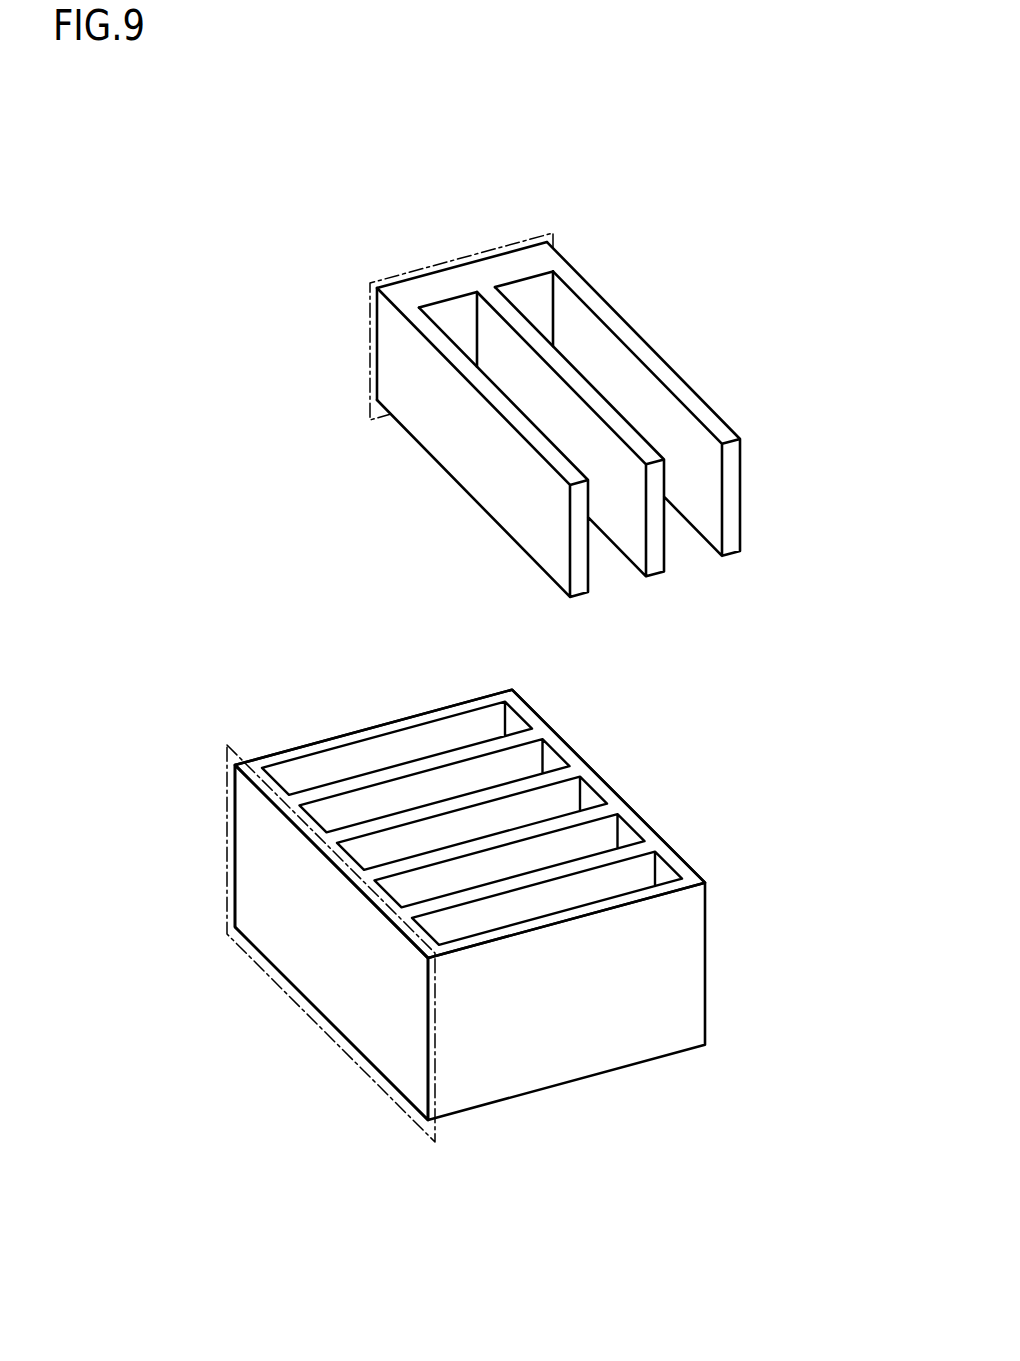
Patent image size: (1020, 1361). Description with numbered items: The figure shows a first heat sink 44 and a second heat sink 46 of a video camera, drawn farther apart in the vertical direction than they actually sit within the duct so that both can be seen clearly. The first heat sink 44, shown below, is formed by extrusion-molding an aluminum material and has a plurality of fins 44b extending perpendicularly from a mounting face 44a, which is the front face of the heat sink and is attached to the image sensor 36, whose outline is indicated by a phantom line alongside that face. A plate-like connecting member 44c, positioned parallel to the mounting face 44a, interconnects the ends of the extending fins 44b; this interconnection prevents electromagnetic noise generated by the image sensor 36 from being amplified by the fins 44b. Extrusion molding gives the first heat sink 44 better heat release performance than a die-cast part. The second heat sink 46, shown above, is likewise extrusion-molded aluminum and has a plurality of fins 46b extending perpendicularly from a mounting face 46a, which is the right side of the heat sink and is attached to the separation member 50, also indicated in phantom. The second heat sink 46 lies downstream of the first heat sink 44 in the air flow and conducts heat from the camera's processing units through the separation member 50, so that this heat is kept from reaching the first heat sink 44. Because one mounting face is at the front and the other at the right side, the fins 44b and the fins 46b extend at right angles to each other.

The image sensor 36 is at (370, 1079).
The first heat sink 44 is at (470, 890).
The mounting face 44a is at (257, 881).
The fins 44b is at (513, 876).
The connecting member 44c is at (573, 749).
The second heat sink 46 is at (593, 369).
The mounting face 46a is at (430, 274).
The fins 46b is at (522, 412).
The separation member 50 is at (503, 248).